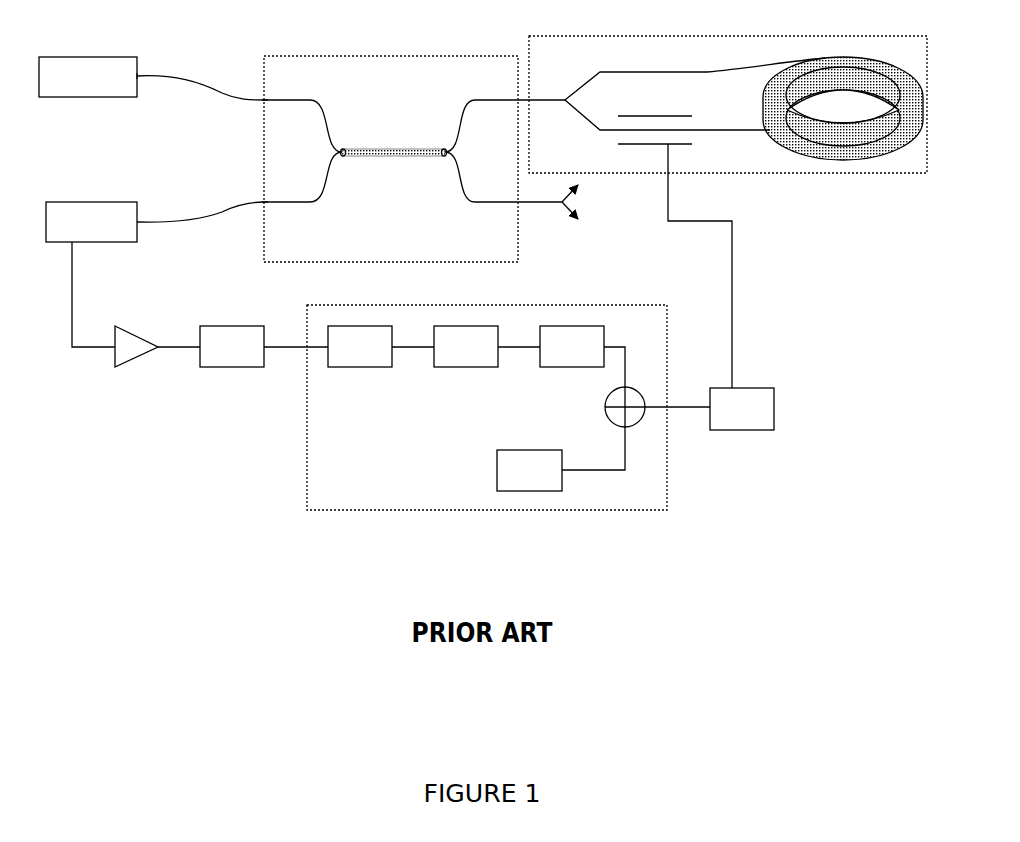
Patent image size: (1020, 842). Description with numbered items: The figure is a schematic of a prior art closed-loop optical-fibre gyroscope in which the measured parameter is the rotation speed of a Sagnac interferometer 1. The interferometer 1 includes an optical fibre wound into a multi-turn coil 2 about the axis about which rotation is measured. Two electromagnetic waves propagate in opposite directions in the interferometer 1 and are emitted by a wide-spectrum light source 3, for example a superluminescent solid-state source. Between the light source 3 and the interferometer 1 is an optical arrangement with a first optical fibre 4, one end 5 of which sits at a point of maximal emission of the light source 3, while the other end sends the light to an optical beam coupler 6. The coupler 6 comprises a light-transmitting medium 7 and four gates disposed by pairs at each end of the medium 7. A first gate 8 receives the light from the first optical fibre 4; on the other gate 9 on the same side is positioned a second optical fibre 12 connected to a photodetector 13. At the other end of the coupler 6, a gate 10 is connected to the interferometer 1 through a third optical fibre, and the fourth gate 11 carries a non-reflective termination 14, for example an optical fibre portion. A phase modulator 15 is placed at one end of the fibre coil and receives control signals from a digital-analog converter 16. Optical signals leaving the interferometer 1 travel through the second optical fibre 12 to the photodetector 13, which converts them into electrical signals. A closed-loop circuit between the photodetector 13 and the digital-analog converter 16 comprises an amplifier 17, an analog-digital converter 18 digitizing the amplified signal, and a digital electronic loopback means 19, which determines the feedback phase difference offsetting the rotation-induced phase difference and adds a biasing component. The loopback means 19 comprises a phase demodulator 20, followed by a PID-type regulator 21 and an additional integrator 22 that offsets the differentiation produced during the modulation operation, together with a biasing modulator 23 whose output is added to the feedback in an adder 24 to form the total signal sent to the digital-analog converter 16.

The Sagnac interferometer 1 is at (582, 35).
The multi-turn coil 2 is at (843, 108).
The light source 3 is at (112, 57).
The first optical fibre 4 is at (218, 93).
The end 5 is at (137, 77).
The optical beam coupler 6 is at (427, 55).
The medium 7 is at (408, 147).
The first gate 8 is at (265, 100).
The gate 9 is at (263, 203).
The gate 10 is at (518, 100).
The fourth gate 11 is at (518, 202).
The second optical fibre 12 is at (218, 217).
The photodetector 13 is at (115, 200).
The non-reflective termination 14 is at (563, 213).
The phase modulator 15 is at (680, 145).
The digital-analog converter 16 is at (773, 413).
The amplifier 17 is at (131, 360).
The analog-digital converter 18 is at (252, 367).
The digital electronic loopback means 19 is at (473, 305).
The phase demodulator 20 is at (376, 367).
The PID-type regulator 21 is at (485, 367).
The additional integrator 22 is at (580, 367).
The biasing modulator 23 is at (533, 448).
The adder 24 is at (638, 425).